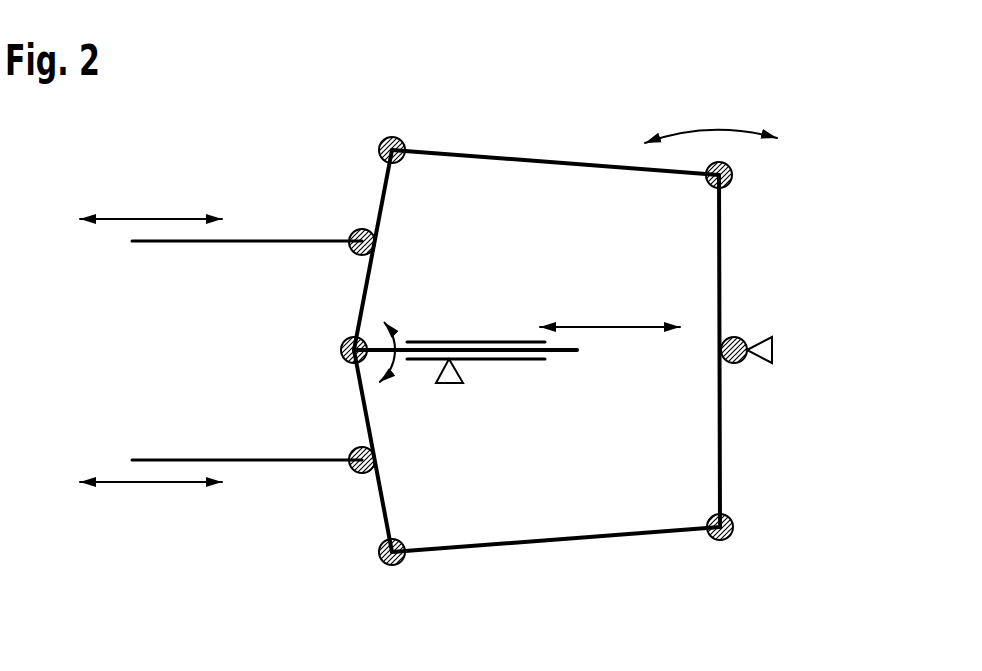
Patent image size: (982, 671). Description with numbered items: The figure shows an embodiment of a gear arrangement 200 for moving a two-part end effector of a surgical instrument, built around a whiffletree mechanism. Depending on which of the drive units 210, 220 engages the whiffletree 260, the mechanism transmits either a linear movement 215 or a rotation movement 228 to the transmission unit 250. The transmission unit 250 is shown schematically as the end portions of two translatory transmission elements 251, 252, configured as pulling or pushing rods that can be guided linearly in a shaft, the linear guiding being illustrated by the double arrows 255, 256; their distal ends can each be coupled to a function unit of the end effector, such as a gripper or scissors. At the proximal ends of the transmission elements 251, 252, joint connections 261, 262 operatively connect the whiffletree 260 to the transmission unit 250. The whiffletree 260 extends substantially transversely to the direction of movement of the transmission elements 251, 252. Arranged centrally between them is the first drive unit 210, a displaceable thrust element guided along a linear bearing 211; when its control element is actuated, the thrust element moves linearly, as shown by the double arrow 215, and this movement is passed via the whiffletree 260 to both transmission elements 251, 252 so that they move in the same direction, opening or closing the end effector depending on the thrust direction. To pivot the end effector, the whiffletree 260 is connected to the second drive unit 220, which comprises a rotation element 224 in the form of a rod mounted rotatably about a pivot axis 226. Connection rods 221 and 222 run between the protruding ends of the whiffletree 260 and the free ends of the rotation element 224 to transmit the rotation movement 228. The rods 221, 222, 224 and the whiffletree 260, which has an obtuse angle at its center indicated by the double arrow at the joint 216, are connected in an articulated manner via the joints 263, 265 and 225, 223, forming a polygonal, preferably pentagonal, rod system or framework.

The gear arrangement 200 is at (820, 110).
The first drive unit 210 is at (560, 355).
The linear bearing 211 is at (470, 341).
The linear movement 215 is at (613, 327).
The joint 216 is at (341, 350).
The second drive unit 220 is at (708, 427).
The connection rod 221 is at (552, 161).
The connection rod 222 is at (550, 541).
The rotation element 224 is at (719, 273).
The joint 223 is at (733, 527).
The joint 225 is at (732, 175).
The pivot axis 226 is at (734, 357).
The rotation movement 228 is at (711, 130).
The transmission unit 250 is at (165, 310).
The transmission element 251 is at (262, 241).
The transmission element 252 is at (261, 463).
The double arrow 255 is at (152, 217).
The double arrow 256 is at (151, 485).
The whiffletree 260 is at (332, 285).
The joint connection 261 is at (358, 232).
The joint connection 262 is at (357, 470).
The joint 263 is at (392, 565).
The joint 265 is at (395, 138).